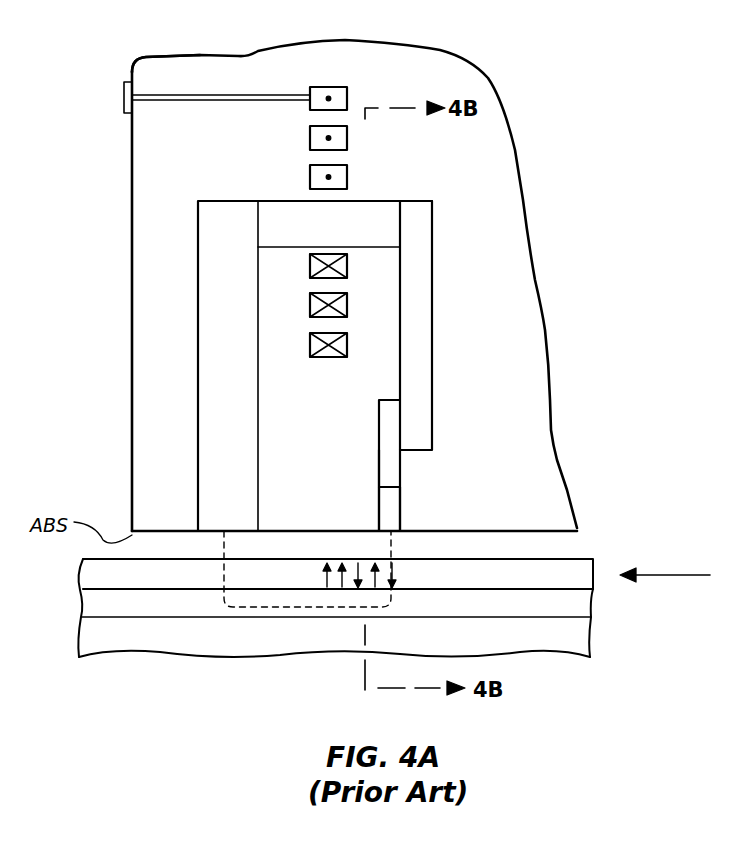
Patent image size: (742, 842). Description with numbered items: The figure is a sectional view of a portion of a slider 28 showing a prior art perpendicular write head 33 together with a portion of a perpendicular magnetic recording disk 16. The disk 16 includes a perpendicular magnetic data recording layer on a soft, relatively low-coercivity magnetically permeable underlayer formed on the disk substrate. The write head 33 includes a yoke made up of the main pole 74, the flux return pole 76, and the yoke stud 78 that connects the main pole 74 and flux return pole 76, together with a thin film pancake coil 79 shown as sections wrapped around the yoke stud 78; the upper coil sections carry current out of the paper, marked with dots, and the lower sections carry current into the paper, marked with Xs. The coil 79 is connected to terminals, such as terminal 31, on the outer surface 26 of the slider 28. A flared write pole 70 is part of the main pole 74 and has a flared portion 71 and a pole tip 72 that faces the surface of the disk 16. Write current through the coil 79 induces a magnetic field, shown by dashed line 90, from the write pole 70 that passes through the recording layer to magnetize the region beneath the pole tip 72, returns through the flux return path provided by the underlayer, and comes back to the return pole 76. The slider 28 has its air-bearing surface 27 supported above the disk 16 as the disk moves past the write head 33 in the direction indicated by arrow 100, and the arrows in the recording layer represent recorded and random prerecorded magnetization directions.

The perpendicular write head 33 is at (517, 36).
The outer surface 26 is at (132, 272).
The slider 28 is at (137, 68).
The terminal 31 is at (124, 98).
The pancake coil 79 is at (351, 87).
The flux return pole 76 is at (210, 372).
The yoke stud 78 is at (378, 208).
The main pole 74 is at (425, 372).
The flared write pole 70 is at (379, 425).
The flared portion 71 is at (379, 470).
The pole tip 72 is at (379, 512).
The air-bearing surface 27 is at (554, 532).
The perpendicular magnetic recording disk 16 is at (85, 637).
The magnetic field 90 is at (224, 616).
The arrow 100 is at (653, 575).